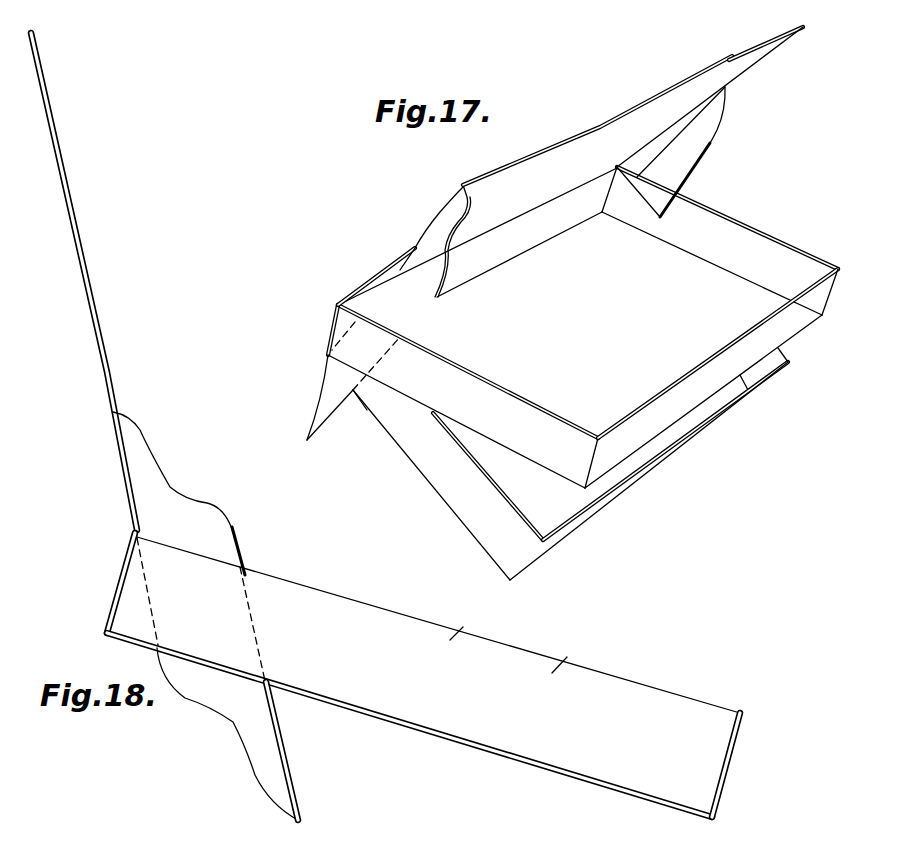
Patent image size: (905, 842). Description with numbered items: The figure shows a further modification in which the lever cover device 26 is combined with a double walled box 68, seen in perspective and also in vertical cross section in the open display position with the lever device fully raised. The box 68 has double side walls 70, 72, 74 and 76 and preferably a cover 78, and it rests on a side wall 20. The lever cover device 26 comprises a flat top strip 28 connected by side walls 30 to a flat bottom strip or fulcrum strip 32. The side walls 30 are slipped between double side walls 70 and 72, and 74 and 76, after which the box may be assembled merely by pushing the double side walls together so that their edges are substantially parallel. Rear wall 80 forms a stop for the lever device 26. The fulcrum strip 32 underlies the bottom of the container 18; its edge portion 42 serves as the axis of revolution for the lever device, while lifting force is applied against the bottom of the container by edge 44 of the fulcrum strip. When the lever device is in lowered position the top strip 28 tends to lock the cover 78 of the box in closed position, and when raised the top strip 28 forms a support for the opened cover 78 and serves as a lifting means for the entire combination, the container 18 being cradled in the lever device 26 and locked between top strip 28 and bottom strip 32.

In FIG. 17, the container 18 is at (643, 477).
In FIG. 18, the container 18 is at (725, 752).
In FIG. 18, the side wall 20 is at (117, 578).
In FIG. 17, the lever cover device 26 is at (430, 218).
In FIG. 18, the lever cover device 26 is at (180, 492).
In FIG. 18, the top strip 28 is at (117, 480).
In FIG. 17, the side walls 30 is at (397, 287).
In FIG. 18, the side walls 30 is at (220, 538).
In FIG. 17, the fulcrum strip 32 is at (348, 413).
In FIG. 18, the fulcrum strip 32 is at (290, 752).
In FIG. 18, the edge portion 42 is at (298, 820).
In FIG. 18, the edge 44 is at (270, 682).
In FIG. 17, the double walled box 68 is at (728, 428).
In FIG. 18, the double walled box 68 is at (736, 770).
In FIG. 17, the double side wall 70 is at (450, 480).
In FIG. 17, the double side wall 72 is at (522, 415).
In FIG. 17, the double side wall 74 is at (672, 248).
In FIG. 18, the double side wall 74 is at (469, 619).
In FIG. 17, the double side wall 76 is at (757, 243).
In FIG. 18, the double side wall 76 is at (572, 651).
In FIG. 17, the cover 78 is at (535, 175).
In FIG. 18, the cover 78 is at (82, 260).
In FIG. 17, the rear wall 80 is at (510, 245).
In FIG. 18, the rear wall 80 is at (127, 592).